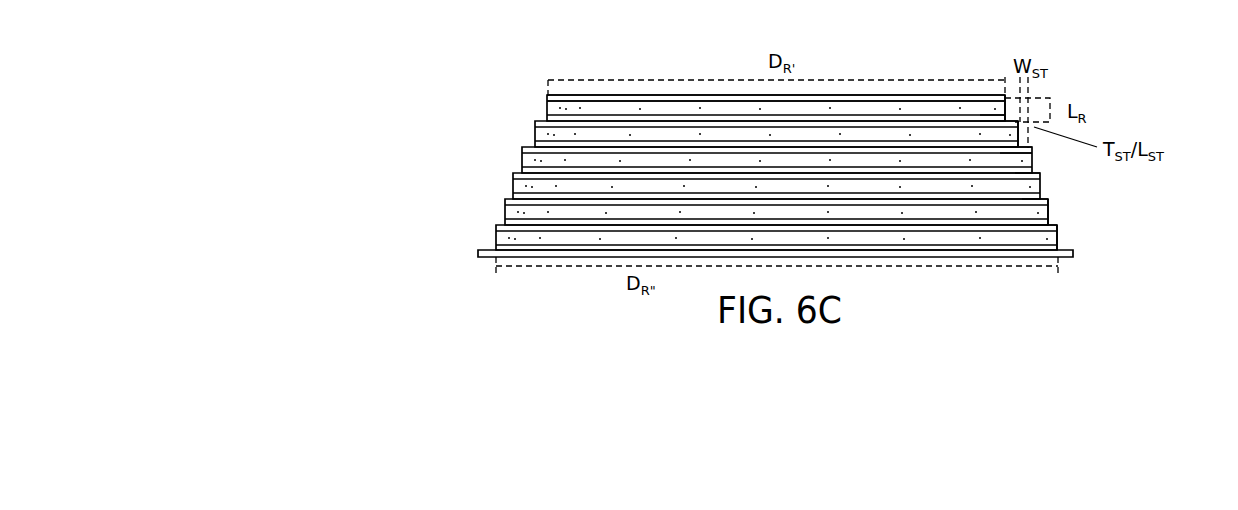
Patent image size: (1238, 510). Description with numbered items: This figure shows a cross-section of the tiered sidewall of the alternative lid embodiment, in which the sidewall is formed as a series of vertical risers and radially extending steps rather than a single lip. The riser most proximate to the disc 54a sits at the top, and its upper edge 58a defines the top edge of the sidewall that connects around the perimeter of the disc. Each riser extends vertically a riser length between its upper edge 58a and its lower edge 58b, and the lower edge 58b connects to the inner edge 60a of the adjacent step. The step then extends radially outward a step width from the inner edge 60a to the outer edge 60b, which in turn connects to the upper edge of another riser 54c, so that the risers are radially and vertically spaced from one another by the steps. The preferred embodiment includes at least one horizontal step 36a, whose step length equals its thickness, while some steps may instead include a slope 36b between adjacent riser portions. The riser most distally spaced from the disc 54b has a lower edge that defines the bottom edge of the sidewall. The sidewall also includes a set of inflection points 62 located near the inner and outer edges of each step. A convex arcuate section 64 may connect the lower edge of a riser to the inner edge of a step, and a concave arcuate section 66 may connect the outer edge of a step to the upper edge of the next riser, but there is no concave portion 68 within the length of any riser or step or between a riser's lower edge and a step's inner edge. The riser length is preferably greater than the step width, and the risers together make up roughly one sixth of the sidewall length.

The inflection points 62 is at (543, 120).
The horizontal step 36a is at (529, 147).
The riser most proximate to the disc 54a is at (545, 105).
The another riser 54c is at (513, 190).
The slope 36b is at (497, 230).
The riser most distally spaced from the disc 54b is at (497, 243).
The upper edge 58a is at (1005, 96).
The lower edge 58b is at (1010, 120).
The inner edge 60a is at (1028, 153).
The outer edge 60b is at (1028, 150).
The convex arcuate section 64 is at (1048, 222).
The concave arcuate section 66 is at (1053, 228).
The concave portion 68 is at (1042, 230).